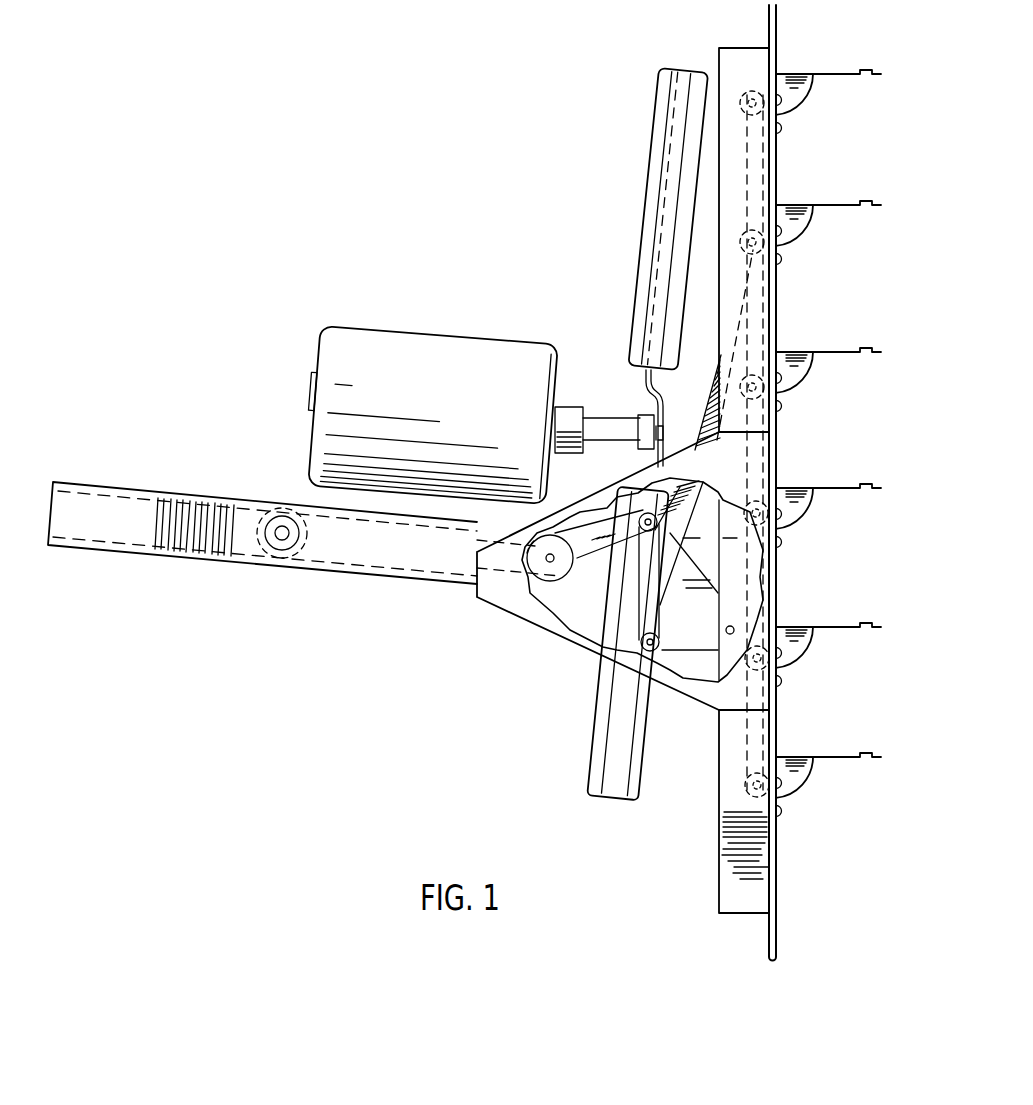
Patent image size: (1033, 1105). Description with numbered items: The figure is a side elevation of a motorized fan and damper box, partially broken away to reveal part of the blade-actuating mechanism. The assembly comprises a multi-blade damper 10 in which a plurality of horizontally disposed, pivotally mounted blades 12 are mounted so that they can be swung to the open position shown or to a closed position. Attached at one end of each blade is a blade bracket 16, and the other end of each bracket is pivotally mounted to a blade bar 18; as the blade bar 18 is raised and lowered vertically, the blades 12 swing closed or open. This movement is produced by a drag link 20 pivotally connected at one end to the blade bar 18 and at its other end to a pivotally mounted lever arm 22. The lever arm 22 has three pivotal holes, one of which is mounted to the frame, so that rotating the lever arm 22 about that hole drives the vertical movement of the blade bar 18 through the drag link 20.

The multi-blade damper 10 is at (835, 306).
The blades 12 is at (818, 626).
The blade bracket 16 is at (790, 100).
The blade bar 18 is at (748, 150).
The drag link 20 is at (738, 313).
The lever arm 22 is at (643, 605).